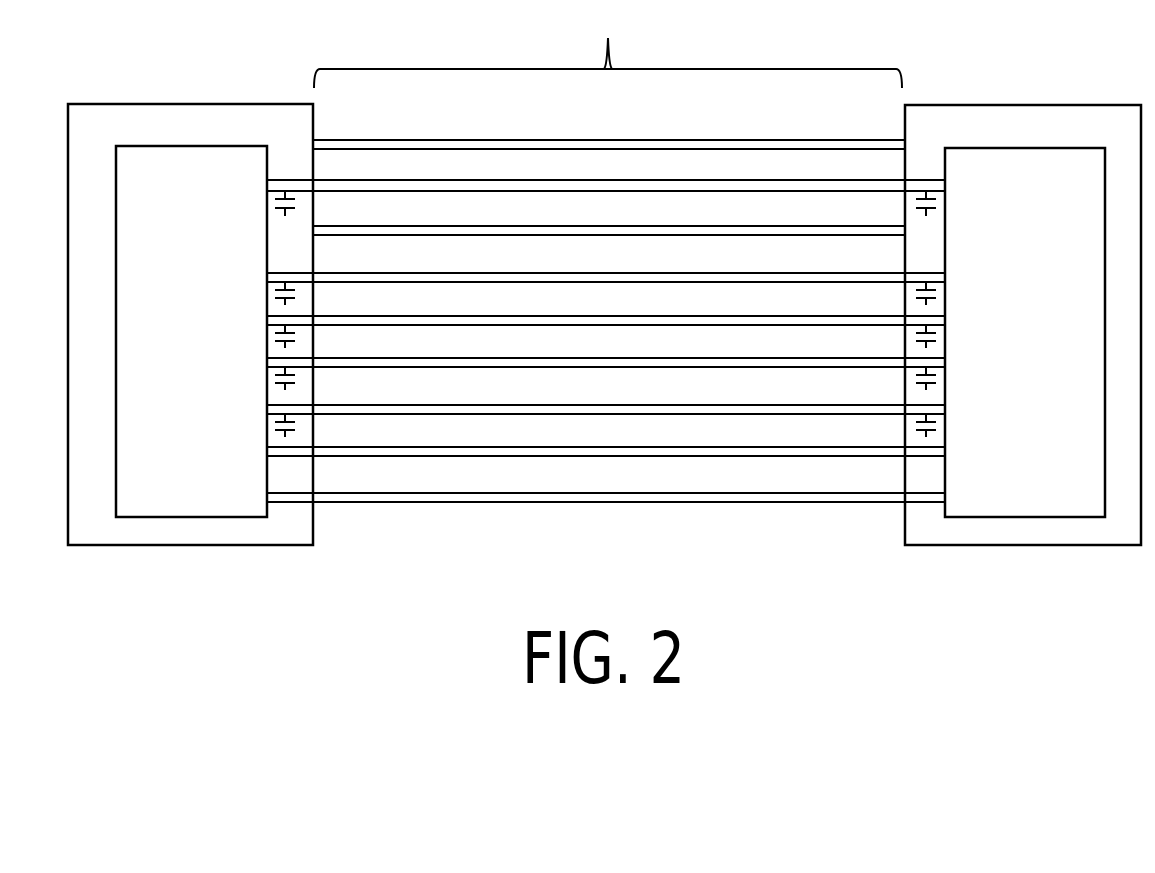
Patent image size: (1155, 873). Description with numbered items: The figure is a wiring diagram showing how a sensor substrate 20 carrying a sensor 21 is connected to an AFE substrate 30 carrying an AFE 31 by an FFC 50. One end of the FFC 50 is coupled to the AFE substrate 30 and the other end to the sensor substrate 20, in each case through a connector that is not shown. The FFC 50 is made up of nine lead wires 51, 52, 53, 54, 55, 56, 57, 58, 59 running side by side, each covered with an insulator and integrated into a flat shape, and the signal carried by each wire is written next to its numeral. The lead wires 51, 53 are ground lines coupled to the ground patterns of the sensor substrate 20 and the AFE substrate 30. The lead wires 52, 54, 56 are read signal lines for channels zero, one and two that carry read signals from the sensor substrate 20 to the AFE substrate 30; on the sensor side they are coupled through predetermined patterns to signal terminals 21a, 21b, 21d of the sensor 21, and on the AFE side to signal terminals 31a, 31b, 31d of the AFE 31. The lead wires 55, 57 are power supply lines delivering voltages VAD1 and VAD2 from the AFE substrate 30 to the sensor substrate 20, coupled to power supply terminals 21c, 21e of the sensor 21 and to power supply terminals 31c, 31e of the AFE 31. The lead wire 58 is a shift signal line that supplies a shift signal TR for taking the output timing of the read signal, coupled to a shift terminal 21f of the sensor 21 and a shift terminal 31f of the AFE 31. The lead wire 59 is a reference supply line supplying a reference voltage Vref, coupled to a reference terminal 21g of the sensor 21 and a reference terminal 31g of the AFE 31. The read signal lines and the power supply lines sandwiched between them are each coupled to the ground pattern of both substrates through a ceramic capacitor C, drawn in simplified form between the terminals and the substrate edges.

The sensor substrate 20 is at (172, 103).
The sensor 21 is at (147, 152).
The signal terminal 21a is at (265, 212).
The signal terminal 21b is at (265, 287).
The power supply terminal 21c is at (265, 330).
The signal terminal 21d is at (265, 372).
The power supply terminal 21e is at (265, 419).
The shift terminal 21f is at (267, 452).
The reference terminal 21g is at (265, 500).
The AFE substrate 30 is at (1007, 105).
The AFE 31 is at (1058, 148).
The signal terminal 31a is at (949, 213).
The signal terminal 31b is at (949, 288).
The power supply terminal 31c is at (948, 332).
The signal terminal 31d is at (949, 374).
The power supply terminal 31e is at (949, 420).
The shift terminal 31f is at (947, 455).
The reference terminal 31g is at (949, 502).
The FFC 50 is at (608, 51).
The lead wire 51 is at (539, 139).
The lead wire 52 is at (539, 179).
The lead wire 53 is at (539, 225).
The lead wire 54 is at (539, 272).
The lead wire 55 is at (539, 315).
The lead wire 56 is at (539, 357).
The lead wire 57 is at (539, 404).
The lead wire 58 is at (539, 446).
The lead wire 59 is at (539, 492).